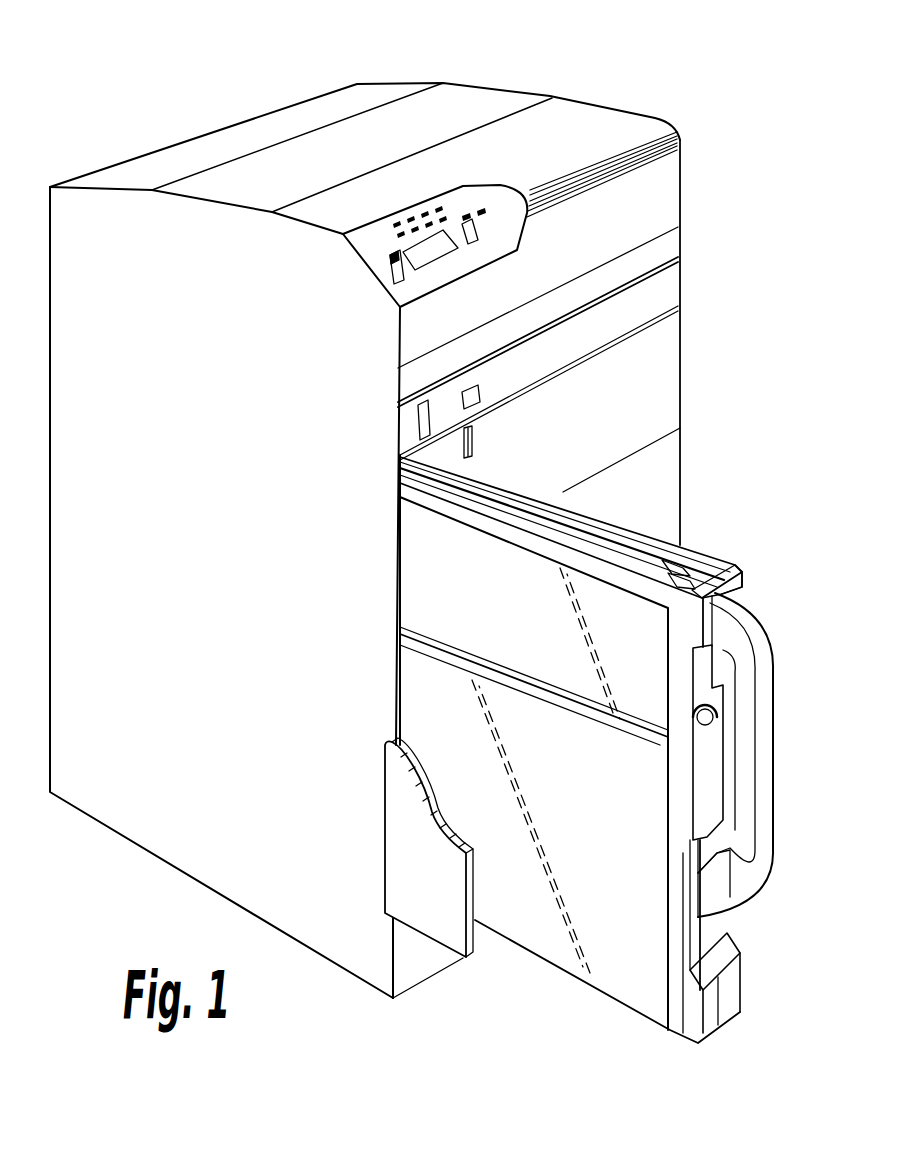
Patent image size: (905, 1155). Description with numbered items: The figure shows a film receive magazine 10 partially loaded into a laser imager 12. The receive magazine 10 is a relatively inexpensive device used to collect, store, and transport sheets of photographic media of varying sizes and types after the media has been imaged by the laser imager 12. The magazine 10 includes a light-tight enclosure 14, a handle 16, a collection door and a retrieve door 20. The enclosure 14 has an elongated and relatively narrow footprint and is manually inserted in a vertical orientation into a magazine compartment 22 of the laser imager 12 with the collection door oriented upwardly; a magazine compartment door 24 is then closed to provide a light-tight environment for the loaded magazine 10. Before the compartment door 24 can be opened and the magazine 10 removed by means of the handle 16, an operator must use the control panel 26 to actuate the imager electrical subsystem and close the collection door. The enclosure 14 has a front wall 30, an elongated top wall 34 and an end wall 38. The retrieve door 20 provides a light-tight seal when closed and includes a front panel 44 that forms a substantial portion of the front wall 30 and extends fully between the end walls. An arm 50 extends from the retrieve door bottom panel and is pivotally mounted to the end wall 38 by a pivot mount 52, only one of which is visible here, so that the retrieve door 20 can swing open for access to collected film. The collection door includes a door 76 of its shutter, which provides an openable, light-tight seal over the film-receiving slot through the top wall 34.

The receive magazine 10 is at (742, 552).
The laser imager 12 is at (606, 103).
The light-tight enclosure 14 is at (732, 1022).
The handle 16 is at (763, 673).
The retrieve door 20 is at (610, 988).
The magazine compartment 22 is at (475, 448).
The magazine compartment door 24 is at (437, 923).
The control panel 26 is at (372, 240).
The front wall 30 is at (653, 623).
The top wall 34 is at (707, 562).
The end wall 38 is at (717, 917).
The front panel 44 is at (527, 920).
The arm 50 is at (707, 762).
The pivot mount 52 is at (713, 718).
The door 76 is at (623, 547).